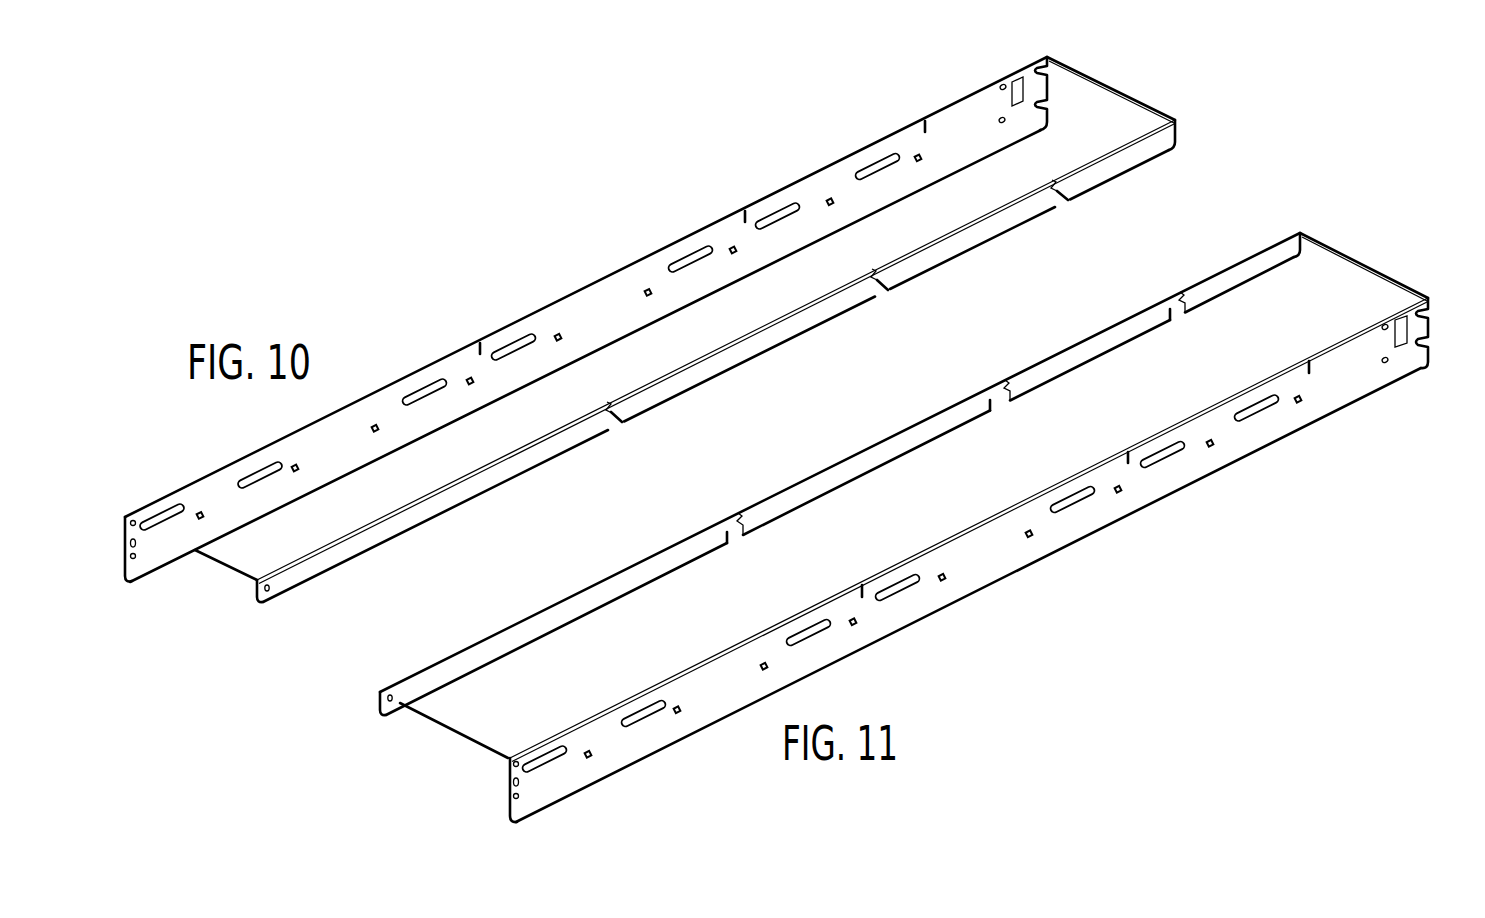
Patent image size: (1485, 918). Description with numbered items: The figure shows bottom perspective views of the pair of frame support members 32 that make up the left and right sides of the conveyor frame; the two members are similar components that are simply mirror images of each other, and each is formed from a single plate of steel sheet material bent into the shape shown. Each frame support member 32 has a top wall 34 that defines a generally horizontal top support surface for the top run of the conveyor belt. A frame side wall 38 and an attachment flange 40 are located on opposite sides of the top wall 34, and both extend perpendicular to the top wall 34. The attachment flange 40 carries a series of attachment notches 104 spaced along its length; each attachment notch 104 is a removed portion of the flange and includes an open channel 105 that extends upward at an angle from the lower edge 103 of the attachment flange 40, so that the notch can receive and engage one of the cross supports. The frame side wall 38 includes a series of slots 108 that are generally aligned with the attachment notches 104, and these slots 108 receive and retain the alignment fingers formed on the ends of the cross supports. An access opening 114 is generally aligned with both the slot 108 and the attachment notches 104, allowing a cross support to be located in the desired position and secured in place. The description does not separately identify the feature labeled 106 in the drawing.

In FIG. 10, the frame support member 32 is at (659, 319).
In FIG. 11, the frame support member 32 is at (912, 517).
In FIG. 10, the top wall 34 is at (1078, 87).
In FIG. 11, the top wall 34 is at (1332, 262).
In FIG. 10, the frame side wall 38 is at (586, 319).
In FIG. 11, the frame side wall 38 is at (969, 560).
In FIG. 10, the attachment flange 40 is at (716, 361).
In FIG. 11, the attachment flange 40 is at (840, 474).
In FIG. 10, the lower edge 103 is at (754, 358).
In FIG. 11, the lower edge 103 is at (872, 470).
In FIG. 10, the attachment notch 104 is at (606, 426).
In FIG. 11, the attachment notch 104 is at (740, 520).
In FIG. 10, the open channel 105 is at (878, 282).
In FIG. 11, the open channel 105 is at (998, 384).
In FIG. 11, the overlap joint 106 is at (1003, 402).
In FIG. 10, the slot 108 is at (749, 210).
In FIG. 11, the slot 108 is at (1131, 452).
In FIG. 10, the access opening 114 is at (731, 245).